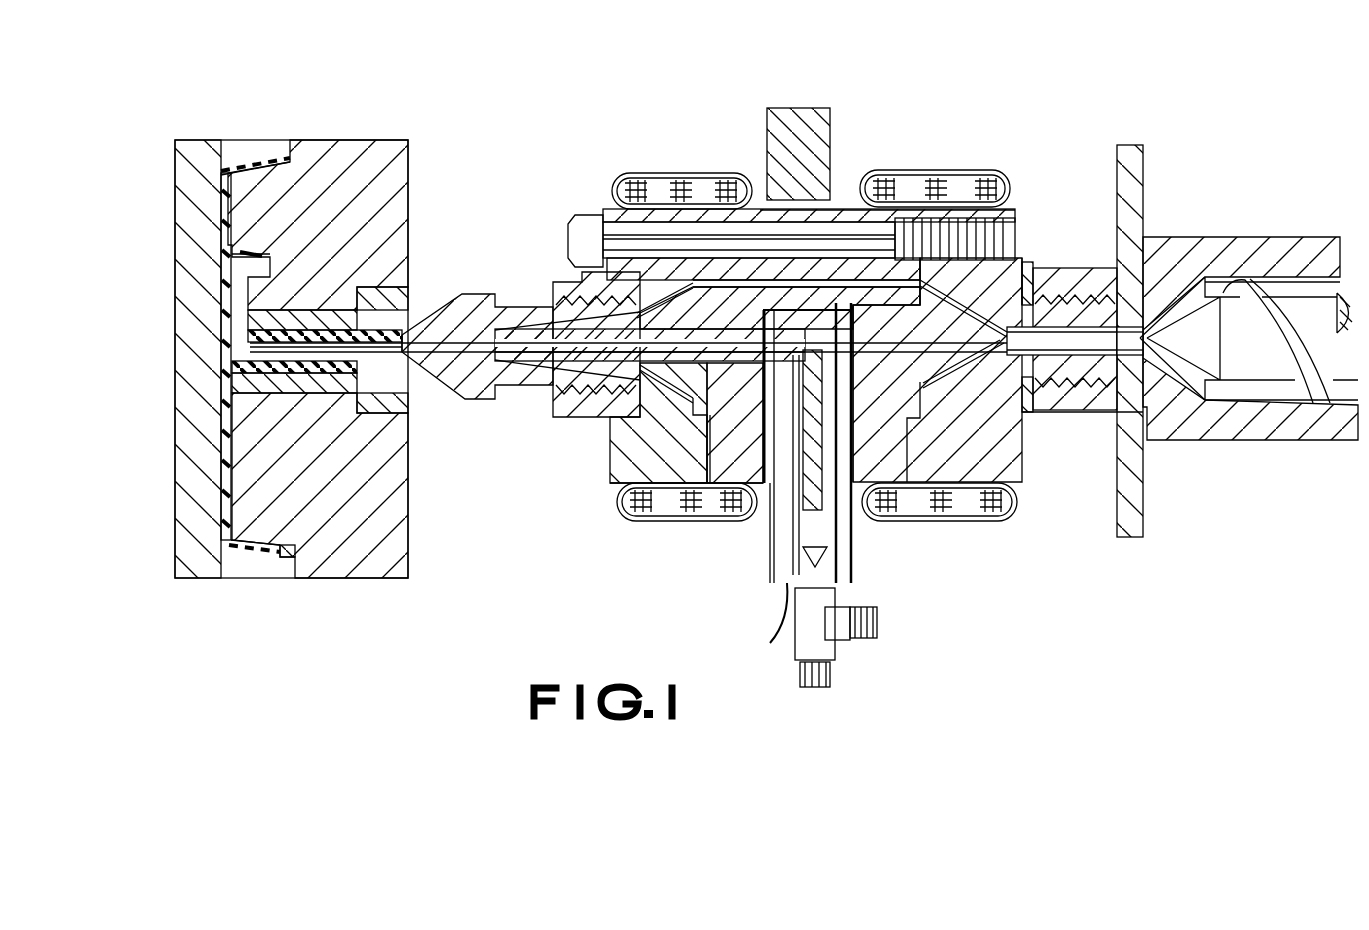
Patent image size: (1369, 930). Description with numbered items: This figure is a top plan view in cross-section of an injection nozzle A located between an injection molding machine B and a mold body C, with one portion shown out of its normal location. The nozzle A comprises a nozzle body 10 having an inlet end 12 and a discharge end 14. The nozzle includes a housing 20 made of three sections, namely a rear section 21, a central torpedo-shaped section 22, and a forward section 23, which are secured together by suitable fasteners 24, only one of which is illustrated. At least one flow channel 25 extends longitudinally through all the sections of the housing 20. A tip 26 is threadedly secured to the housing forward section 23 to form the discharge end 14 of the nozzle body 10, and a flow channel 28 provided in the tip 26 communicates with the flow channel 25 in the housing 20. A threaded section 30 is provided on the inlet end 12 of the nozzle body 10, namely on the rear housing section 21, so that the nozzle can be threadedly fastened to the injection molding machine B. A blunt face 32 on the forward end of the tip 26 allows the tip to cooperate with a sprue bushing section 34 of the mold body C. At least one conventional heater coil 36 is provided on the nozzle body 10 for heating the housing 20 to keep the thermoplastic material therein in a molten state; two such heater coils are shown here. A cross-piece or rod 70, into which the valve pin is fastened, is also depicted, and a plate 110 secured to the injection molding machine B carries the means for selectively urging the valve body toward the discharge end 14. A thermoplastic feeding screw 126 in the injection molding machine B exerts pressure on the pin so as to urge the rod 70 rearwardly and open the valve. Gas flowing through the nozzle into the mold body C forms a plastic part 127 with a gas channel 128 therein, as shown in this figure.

The nozzle body 10 is at (551, 403).
The inlet end 12 is at (1058, 313).
The discharge end 14 is at (428, 322).
The housing 20 is at (1029, 449).
The rear section 21 is at (975, 468).
The central torpedo-shaped section 22 is at (947, 348).
The forward section 23 is at (620, 460).
The fasteners 24 is at (625, 237).
The flow channel 25 is at (1012, 275).
The tip 26 is at (478, 403).
The flow channel 28 is at (450, 345).
The threaded section 30 is at (1082, 372).
The blunt face 32 is at (363, 291).
The sprue bushing section 34 is at (395, 385).
The heater coil 36 is at (628, 185).
The rod 70 is at (770, 544).
The plate 110 is at (1146, 186).
The screw 126 is at (1335, 392).
The plastic part 127 is at (283, 555).
The gas channel 128 is at (285, 352).
The nozzle A is at (841, 198).
The injection molding machine B is at (1252, 232).
The mold body C is at (365, 133).